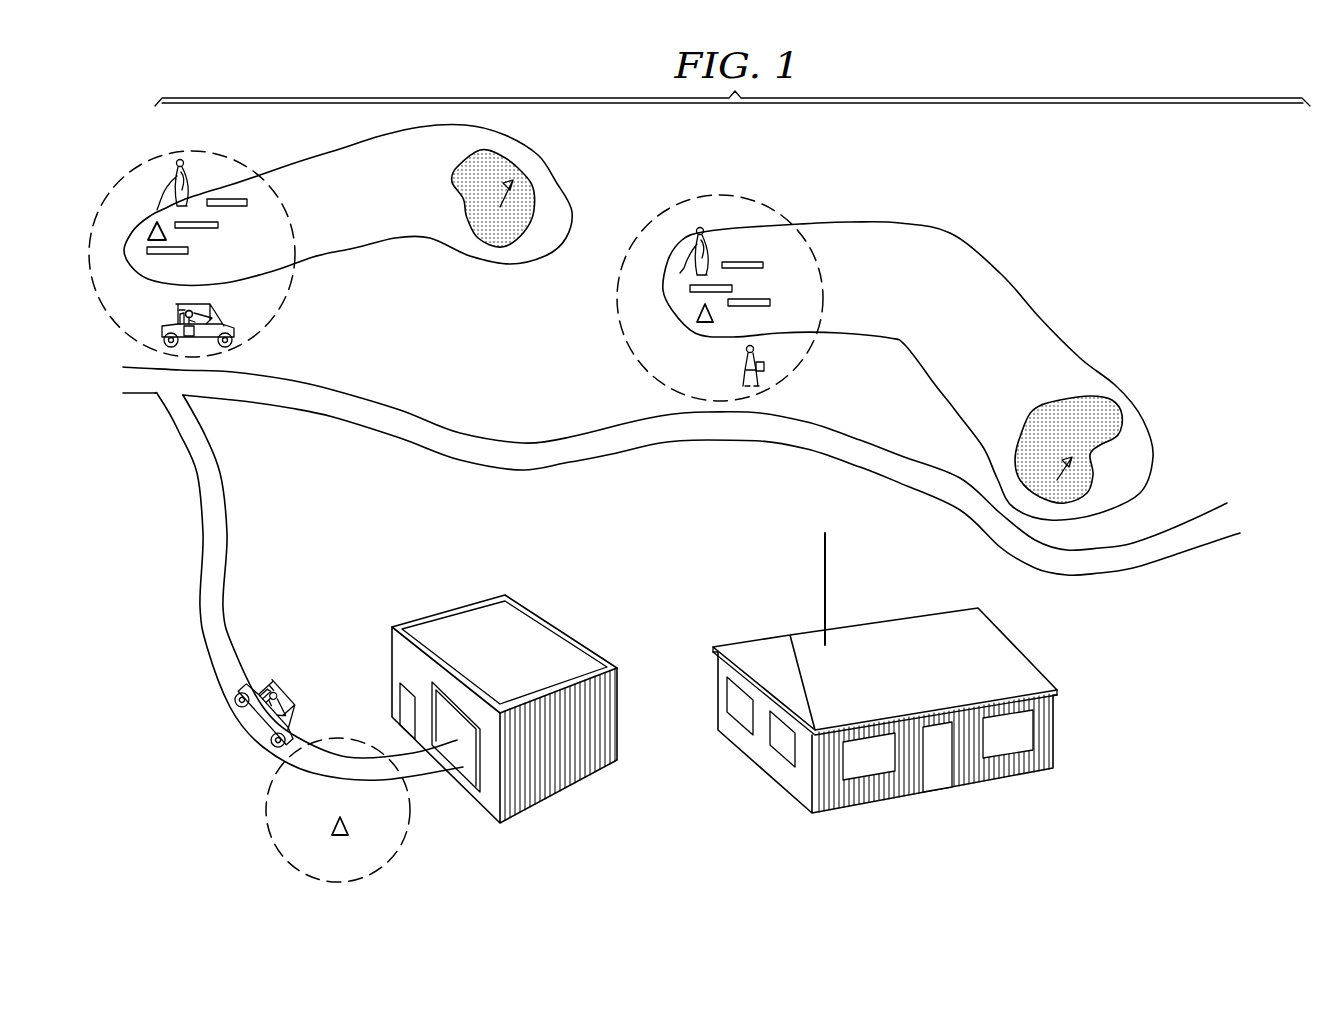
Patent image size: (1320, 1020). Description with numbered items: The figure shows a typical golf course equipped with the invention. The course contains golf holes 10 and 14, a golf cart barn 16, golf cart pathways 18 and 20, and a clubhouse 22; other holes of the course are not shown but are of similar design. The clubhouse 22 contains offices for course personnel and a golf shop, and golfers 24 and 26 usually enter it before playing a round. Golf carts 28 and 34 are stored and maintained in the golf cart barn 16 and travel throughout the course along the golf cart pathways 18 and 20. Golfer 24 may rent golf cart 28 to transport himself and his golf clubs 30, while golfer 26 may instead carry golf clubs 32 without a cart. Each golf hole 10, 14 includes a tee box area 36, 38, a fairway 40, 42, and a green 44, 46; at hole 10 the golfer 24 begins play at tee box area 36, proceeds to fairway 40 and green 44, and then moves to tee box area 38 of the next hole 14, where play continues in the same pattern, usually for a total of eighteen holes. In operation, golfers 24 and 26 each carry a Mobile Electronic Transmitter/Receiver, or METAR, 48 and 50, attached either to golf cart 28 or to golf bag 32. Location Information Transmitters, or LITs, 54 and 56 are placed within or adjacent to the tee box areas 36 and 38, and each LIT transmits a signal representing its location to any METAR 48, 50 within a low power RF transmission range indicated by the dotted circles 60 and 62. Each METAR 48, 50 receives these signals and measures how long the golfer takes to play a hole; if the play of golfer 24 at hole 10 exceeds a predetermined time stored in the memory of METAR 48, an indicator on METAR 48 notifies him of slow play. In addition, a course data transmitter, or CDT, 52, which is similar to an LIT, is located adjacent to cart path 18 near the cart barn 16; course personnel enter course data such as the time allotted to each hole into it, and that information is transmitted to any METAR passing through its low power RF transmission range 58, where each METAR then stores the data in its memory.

The golf hole 10 is at (540, 154).
The golf hole 14 is at (1063, 316).
The golf cart barn 16 is at (568, 785).
The golf cart pathway 18 is at (203, 533).
The golf cart pathway 20 is at (332, 392).
The clubhouse 22 is at (907, 797).
The golfer 24 is at (170, 169).
The golfer 26 is at (713, 228).
The golf cart 28 is at (222, 309).
The golf clubs 30 is at (168, 314).
The golf clubs 32 is at (742, 351).
The golf cart 34 is at (276, 682).
The tee box area 36 is at (218, 225).
The tee box area 38 is at (732, 289).
The fairway 40 is at (318, 162).
The fairway 42 is at (945, 238).
The green 44 is at (486, 234).
The green 46 is at (1087, 410).
The Mobile Electronic Transmitter/Receiver (METAR) 48 is at (188, 340).
The Mobile Electronic Transmitter/Receiver (METAR) 50 is at (765, 371).
The course data transmitter (CDT) 52 is at (333, 822).
The Location Information Transmitter (LIT) 54 is at (152, 227).
The Location Information Transmitter (LIT) 56 is at (697, 320).
The low power RF transmission range 58 is at (267, 795).
The low power RF transmission range 60 is at (286, 300).
The low power RF transmission range 62 is at (763, 203).